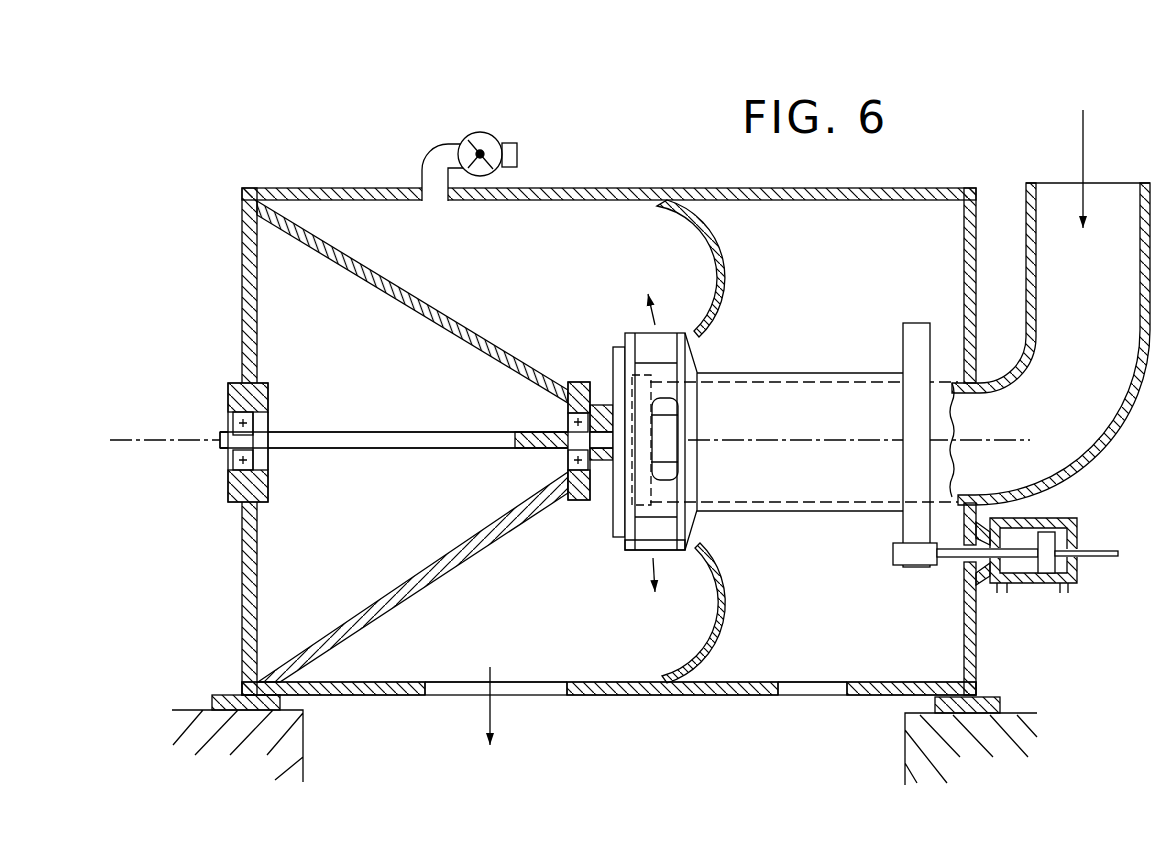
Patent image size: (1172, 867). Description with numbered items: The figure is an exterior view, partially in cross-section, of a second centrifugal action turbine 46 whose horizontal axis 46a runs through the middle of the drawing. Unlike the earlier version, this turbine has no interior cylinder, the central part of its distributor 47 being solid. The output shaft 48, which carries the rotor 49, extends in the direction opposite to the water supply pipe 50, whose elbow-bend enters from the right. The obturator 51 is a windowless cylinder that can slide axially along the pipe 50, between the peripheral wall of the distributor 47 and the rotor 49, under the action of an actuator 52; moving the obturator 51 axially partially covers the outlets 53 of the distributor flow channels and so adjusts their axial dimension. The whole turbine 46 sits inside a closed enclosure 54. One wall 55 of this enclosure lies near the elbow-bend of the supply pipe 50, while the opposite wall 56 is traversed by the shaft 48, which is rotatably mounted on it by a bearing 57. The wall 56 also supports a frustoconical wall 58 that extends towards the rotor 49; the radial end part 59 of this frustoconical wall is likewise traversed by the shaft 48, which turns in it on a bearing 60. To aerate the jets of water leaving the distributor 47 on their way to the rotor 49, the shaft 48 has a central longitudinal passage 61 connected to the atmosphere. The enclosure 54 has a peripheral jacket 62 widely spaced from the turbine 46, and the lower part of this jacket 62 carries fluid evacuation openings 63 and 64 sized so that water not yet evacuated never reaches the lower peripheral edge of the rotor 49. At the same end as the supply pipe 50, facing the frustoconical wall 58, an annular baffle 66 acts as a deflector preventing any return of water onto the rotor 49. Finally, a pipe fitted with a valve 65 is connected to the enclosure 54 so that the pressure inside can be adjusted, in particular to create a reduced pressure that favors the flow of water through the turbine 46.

The centrifugal action turbine 46 is at (846, 427).
The horizontal axis 46a is at (1000, 442).
The distributor 47 is at (631, 461).
The output shaft 48 is at (365, 452).
The rotor 49 is at (633, 560).
The water supply pipe 50 is at (1108, 462).
The obturator 51 is at (808, 470).
The actuator 52 is at (1033, 585).
The outlets of the flow channels 53 is at (642, 447).
The closed enclosure 54 is at (604, 465).
The wall 55 is at (972, 650).
The opposite wall 56 is at (248, 568).
The bearing 57 is at (237, 456).
The frustoconical wall 58 is at (455, 565).
The radial end part 59 is at (578, 500).
The bearing 60 is at (568, 423).
The central longitudinal passage 61 is at (530, 447).
The peripheral jacket 62 is at (606, 189).
The fluid evacuation opening 63 is at (465, 690).
The fluid evacuation opening 64 is at (813, 690).
The valve 65 is at (483, 142).
The annular baffle 66 is at (722, 612).